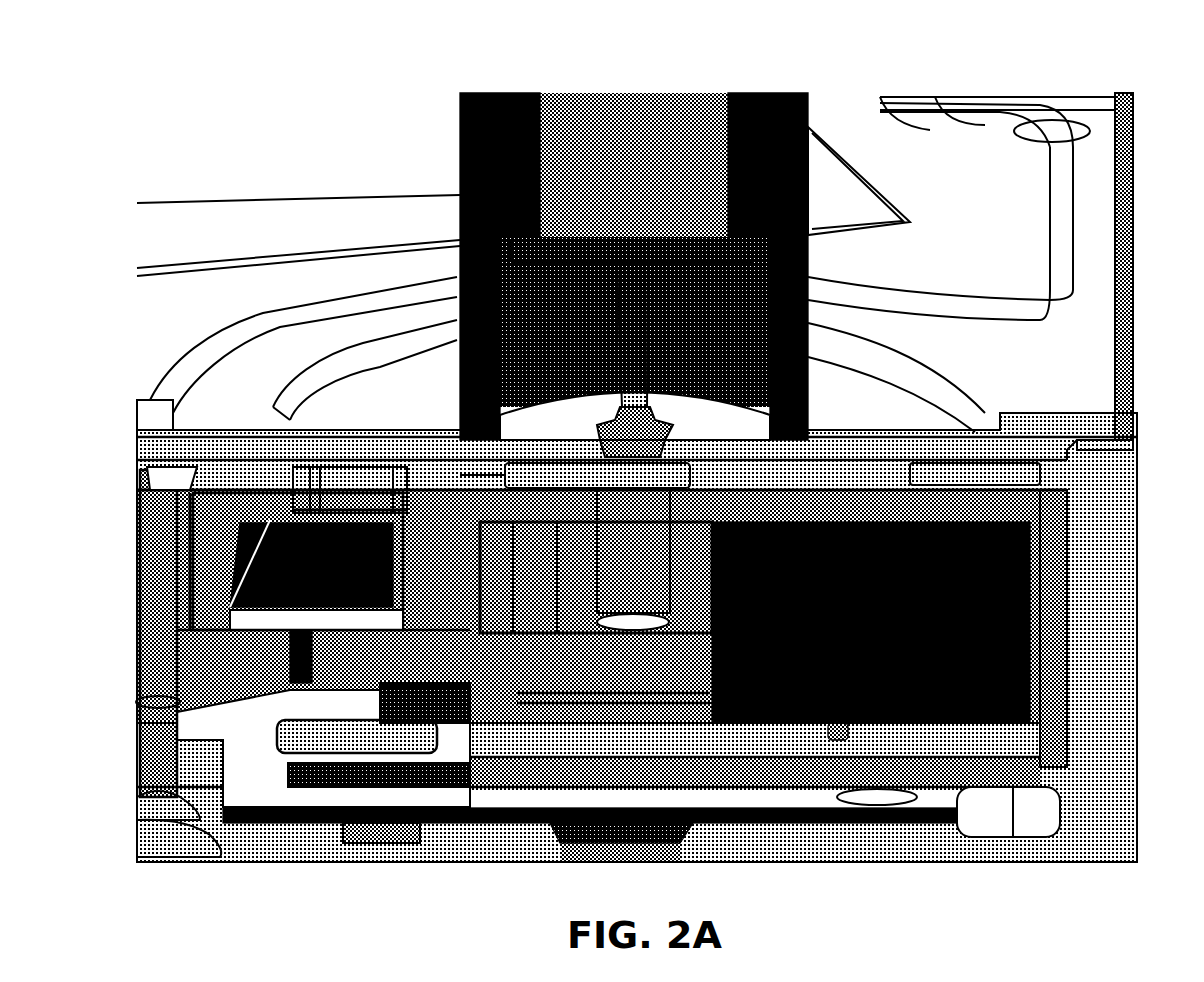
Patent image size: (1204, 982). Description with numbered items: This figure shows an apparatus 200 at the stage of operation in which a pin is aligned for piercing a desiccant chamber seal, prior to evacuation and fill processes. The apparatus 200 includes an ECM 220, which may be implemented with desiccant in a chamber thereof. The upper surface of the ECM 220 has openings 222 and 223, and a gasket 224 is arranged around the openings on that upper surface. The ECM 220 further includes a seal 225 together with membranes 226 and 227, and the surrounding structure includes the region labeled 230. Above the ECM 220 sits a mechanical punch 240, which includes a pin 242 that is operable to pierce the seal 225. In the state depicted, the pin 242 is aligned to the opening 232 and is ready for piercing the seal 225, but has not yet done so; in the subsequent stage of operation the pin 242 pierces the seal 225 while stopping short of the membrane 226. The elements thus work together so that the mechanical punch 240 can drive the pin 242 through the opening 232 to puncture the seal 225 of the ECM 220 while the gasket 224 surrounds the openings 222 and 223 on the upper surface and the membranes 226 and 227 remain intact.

The apparatus 200 is at (1118, 52).
The ECM 220 is at (875, 498).
The opening 222 is at (335, 560).
The opening 223 is at (645, 525).
The gasket 224 is at (264, 490).
The seal 225 is at (618, 490).
The membrane 226 is at (623, 634).
The membrane 227 is at (285, 633).
The top surface 230 is at (832, 420).
The opening 232 is at (612, 428).
The mechanical punch 240 is at (668, 92).
The pin 242 is at (638, 272).